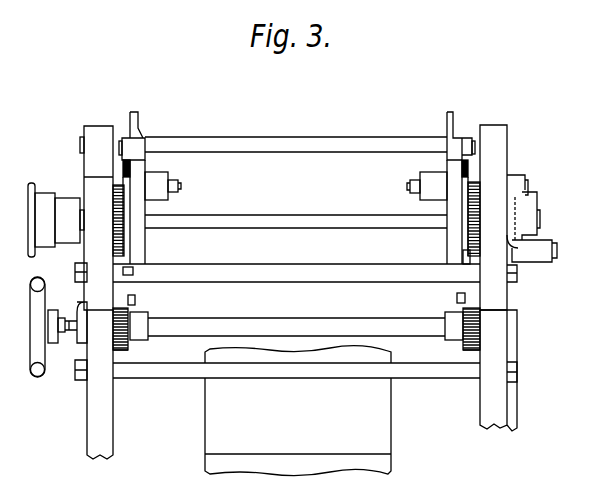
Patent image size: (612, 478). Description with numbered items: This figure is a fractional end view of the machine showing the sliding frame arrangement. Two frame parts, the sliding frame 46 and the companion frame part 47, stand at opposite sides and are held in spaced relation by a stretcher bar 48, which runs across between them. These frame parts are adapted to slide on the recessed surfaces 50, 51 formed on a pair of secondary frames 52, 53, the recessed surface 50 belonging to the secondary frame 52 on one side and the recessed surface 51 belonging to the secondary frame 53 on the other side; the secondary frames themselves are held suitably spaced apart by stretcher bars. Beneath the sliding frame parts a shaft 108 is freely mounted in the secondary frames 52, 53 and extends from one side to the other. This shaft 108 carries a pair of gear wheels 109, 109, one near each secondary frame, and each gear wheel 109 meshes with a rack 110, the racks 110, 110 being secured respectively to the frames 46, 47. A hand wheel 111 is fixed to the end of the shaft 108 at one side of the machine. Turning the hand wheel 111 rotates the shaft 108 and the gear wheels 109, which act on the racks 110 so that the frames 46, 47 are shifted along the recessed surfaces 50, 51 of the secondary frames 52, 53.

The sliding frame 46 is at (497, 148).
The frame part 47 is at (92, 132).
The stretcher bar 48 is at (251, 283).
The recessed surface 50 is at (109, 309).
The recessed surface 51 is at (489, 309).
The secondary frame 52 is at (90, 443).
The secondary frame 53 is at (489, 409).
The shaft 108 is at (317, 322).
The gear wheel 109 is at (129, 346).
The rack 110 is at (135, 294).
The hand wheel 111 is at (38, 376).